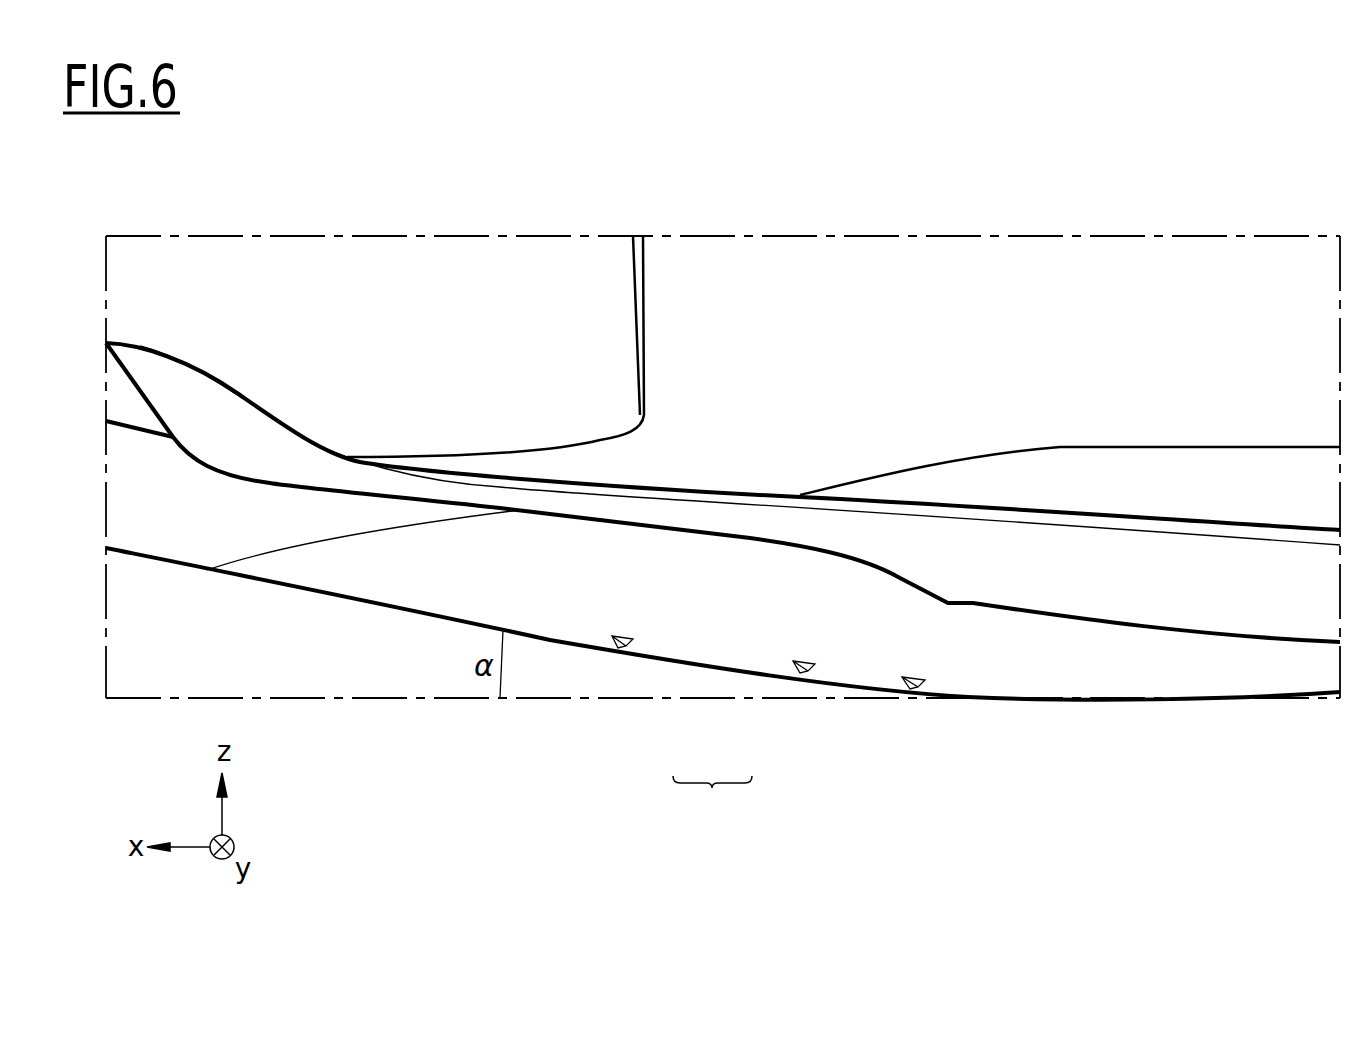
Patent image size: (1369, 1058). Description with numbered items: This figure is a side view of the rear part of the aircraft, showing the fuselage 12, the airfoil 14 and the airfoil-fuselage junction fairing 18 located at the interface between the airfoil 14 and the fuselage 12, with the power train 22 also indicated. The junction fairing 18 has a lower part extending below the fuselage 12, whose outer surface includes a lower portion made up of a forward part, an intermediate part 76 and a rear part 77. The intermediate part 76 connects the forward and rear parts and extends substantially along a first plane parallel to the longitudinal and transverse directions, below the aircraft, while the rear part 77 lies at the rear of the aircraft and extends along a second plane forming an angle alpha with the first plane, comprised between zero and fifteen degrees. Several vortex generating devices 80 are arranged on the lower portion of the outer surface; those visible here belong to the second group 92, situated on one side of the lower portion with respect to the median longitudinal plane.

The fuselage 12 is at (891, 317).
The airfoil 14 is at (720, 512).
The airfoil-fuselage junction fairing 18 is at (1133, 485).
The power train 22 is at (397, 313).
The intermediate part 76 is at (1088, 686).
The rear part 77 is at (410, 583).
The vortex generating device 80 is at (908, 688).
The second group 92 is at (712, 800).